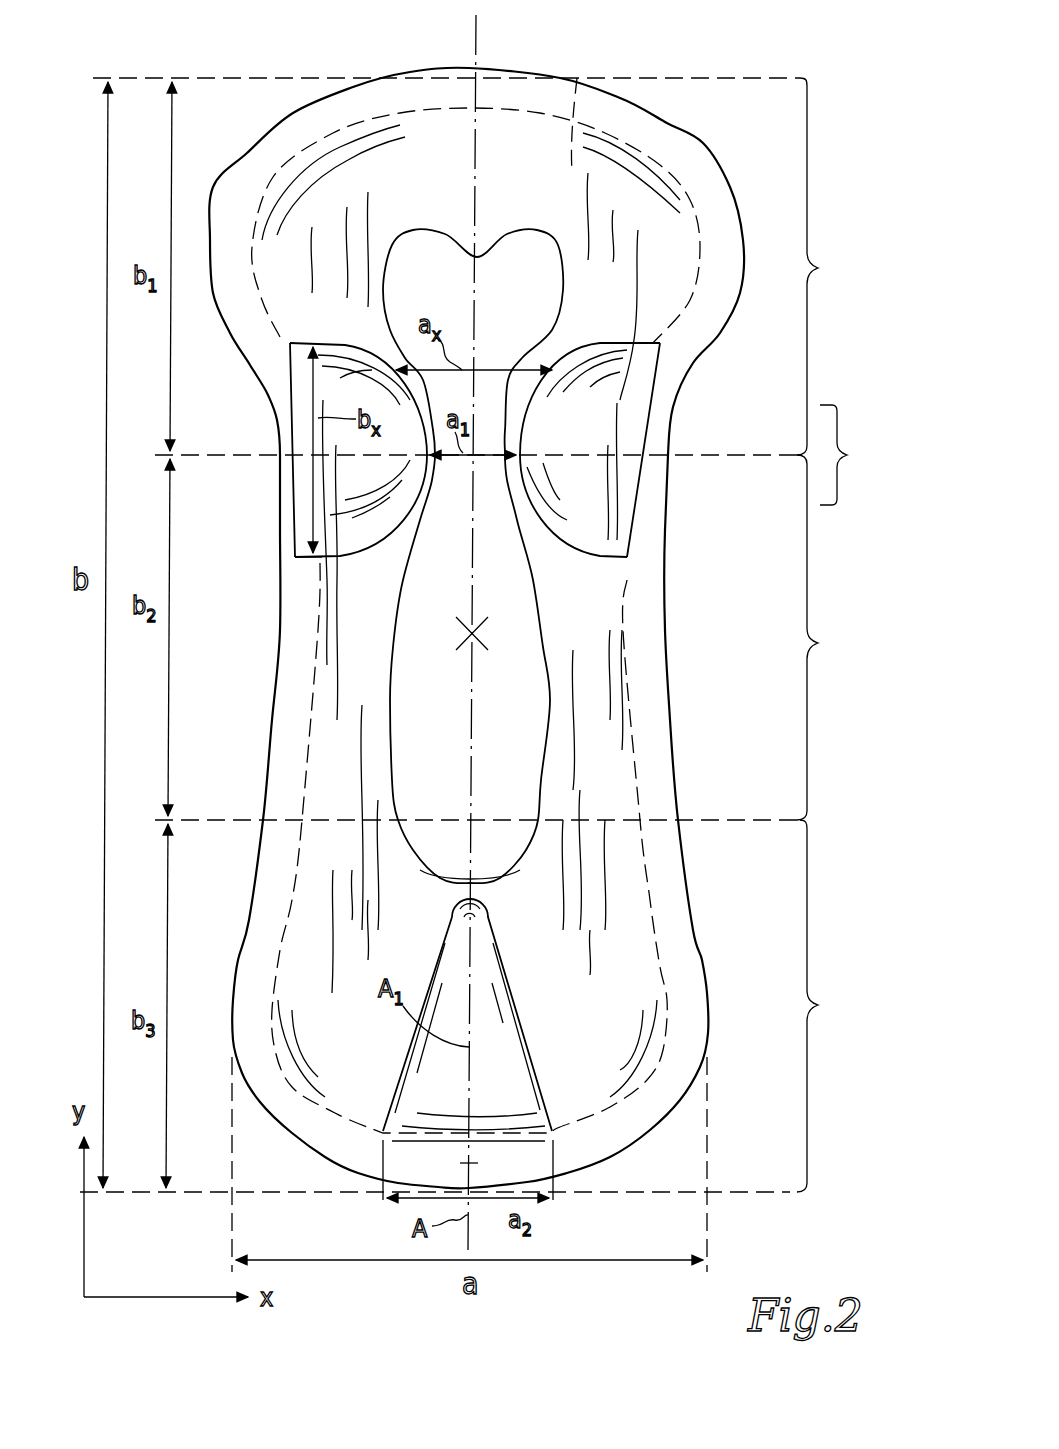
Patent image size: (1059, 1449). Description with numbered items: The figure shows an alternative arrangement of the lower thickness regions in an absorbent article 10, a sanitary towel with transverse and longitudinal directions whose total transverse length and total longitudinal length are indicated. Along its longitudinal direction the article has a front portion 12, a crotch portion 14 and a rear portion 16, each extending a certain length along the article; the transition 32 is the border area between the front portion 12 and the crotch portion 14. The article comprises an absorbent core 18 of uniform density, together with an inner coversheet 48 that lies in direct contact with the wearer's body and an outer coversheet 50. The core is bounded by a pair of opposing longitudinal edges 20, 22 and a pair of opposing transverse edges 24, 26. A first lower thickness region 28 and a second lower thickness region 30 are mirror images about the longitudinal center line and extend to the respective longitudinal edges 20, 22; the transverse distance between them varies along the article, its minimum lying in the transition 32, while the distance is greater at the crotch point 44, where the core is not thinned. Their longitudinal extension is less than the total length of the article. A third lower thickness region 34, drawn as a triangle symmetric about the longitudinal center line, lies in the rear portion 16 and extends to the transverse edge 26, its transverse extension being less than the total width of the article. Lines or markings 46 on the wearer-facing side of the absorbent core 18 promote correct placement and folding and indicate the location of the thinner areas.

The absorbent article 10 is at (790, 63).
The front portion 12 is at (478, 266).
The crotch portion 14 is at (505, 637).
The rear portion 16 is at (467, 1006).
The absorbent core 18 is at (564, 623).
The longitudinal edge 20 is at (626, 580).
The longitudinal edge 22 is at (318, 630).
The transverse edge 24 is at (523, 108).
The transverse edge 26 is at (517, 1140).
The first lower thickness region 28 is at (345, 515).
The second lower thickness region 30 is at (590, 414).
The transition 32 is at (851, 455).
The third lower thickness region 34 is at (480, 1028).
The crotch point 44 is at (472, 633).
The lines or markings 46 is at (512, 875).
The inner coversheet 48 is at (606, 201).
The outer coversheet 50 is at (577, 78).